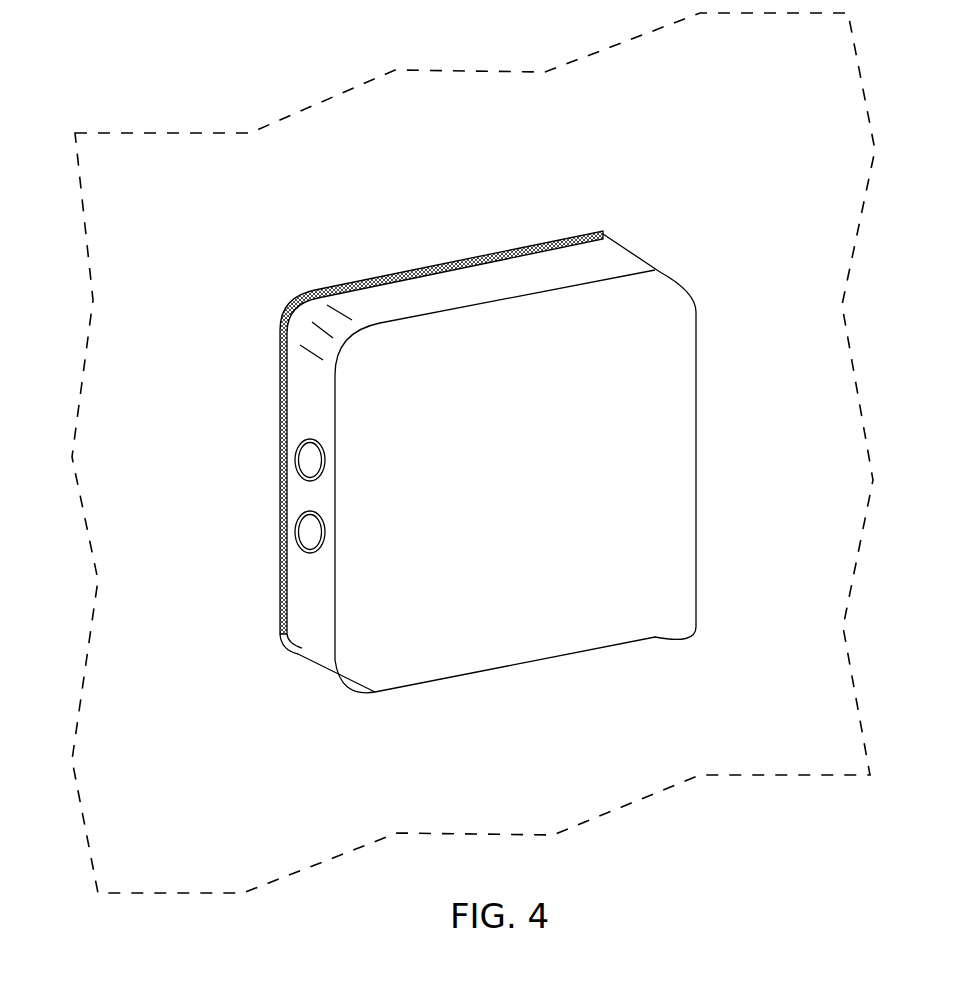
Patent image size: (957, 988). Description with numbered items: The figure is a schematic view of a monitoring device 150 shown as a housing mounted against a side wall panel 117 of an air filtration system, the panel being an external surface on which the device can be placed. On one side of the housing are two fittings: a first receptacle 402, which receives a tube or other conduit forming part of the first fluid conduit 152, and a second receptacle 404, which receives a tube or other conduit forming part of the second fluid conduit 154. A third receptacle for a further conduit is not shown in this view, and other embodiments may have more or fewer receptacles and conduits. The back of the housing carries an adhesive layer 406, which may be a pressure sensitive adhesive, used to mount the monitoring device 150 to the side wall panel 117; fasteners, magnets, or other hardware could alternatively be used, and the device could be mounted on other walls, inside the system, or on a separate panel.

The side wall panel 117 is at (538, 753).
The monitoring device 150 is at (625, 421).
The first fluid conduit 152 is at (297, 460).
The second fluid conduit 154 is at (297, 533).
The first receptacle 402 is at (303, 447).
The second receptacle 404 is at (307, 550).
The adhesive layer 406 is at (282, 608).